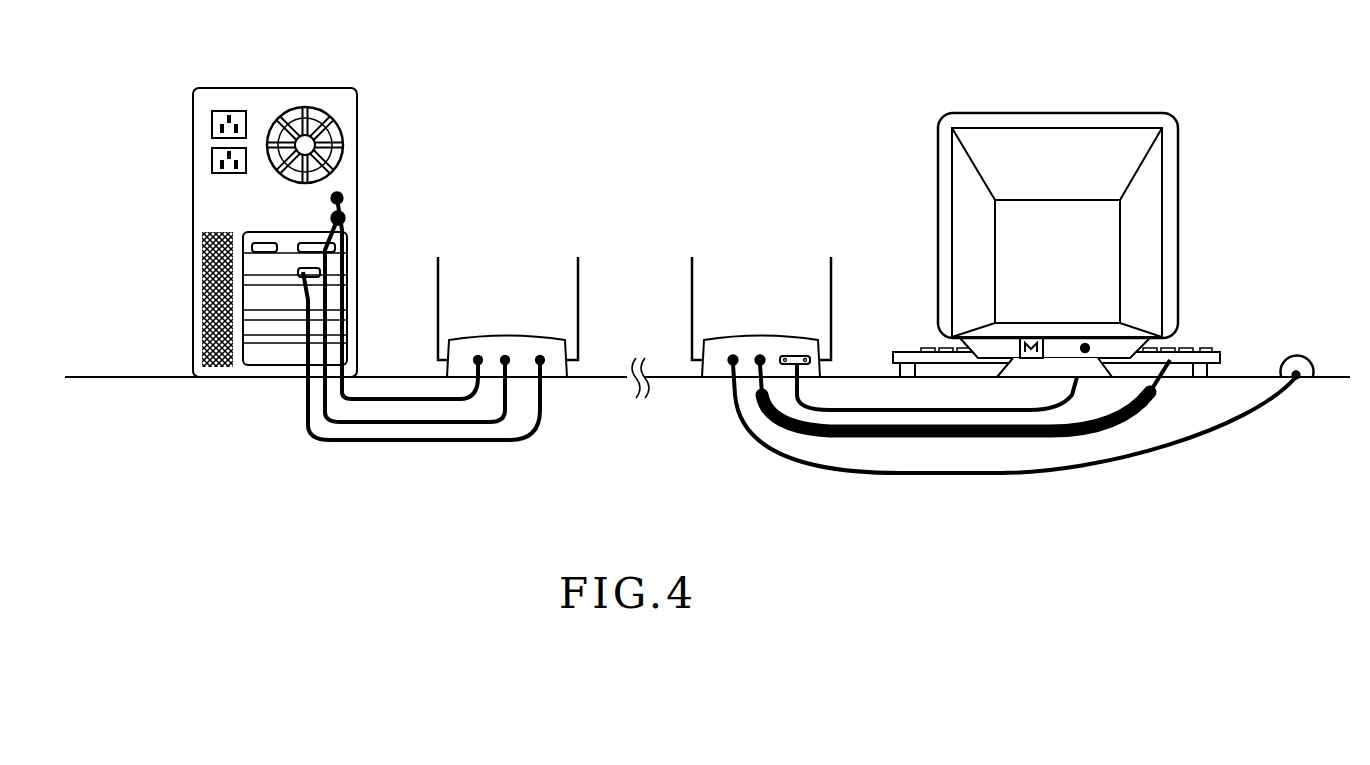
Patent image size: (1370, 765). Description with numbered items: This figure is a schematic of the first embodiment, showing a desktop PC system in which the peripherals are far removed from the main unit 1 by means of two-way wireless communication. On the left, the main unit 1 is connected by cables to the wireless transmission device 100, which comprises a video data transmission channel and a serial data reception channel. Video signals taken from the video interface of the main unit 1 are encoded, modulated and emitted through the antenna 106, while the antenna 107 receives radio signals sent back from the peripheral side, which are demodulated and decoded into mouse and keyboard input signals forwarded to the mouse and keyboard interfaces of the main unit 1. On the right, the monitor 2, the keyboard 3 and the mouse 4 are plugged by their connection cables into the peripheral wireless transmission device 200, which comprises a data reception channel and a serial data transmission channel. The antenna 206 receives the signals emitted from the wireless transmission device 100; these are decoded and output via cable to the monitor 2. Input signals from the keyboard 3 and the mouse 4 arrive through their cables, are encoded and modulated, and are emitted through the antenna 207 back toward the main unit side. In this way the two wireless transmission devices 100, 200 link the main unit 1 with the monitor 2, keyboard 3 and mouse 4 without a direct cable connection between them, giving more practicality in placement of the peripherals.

The main unit 1 is at (270, 92).
The monitor 2 is at (1043, 135).
The keyboard 3 is at (1218, 353).
The mouse 4 is at (1313, 370).
The wireless transmission device 100 is at (508, 350).
The antenna 106 is at (447, 272).
The antenna 107 is at (580, 270).
The peripheral wireless transmission device 200 is at (752, 345).
The antenna 206 is at (698, 273).
The antenna 207 is at (840, 287).